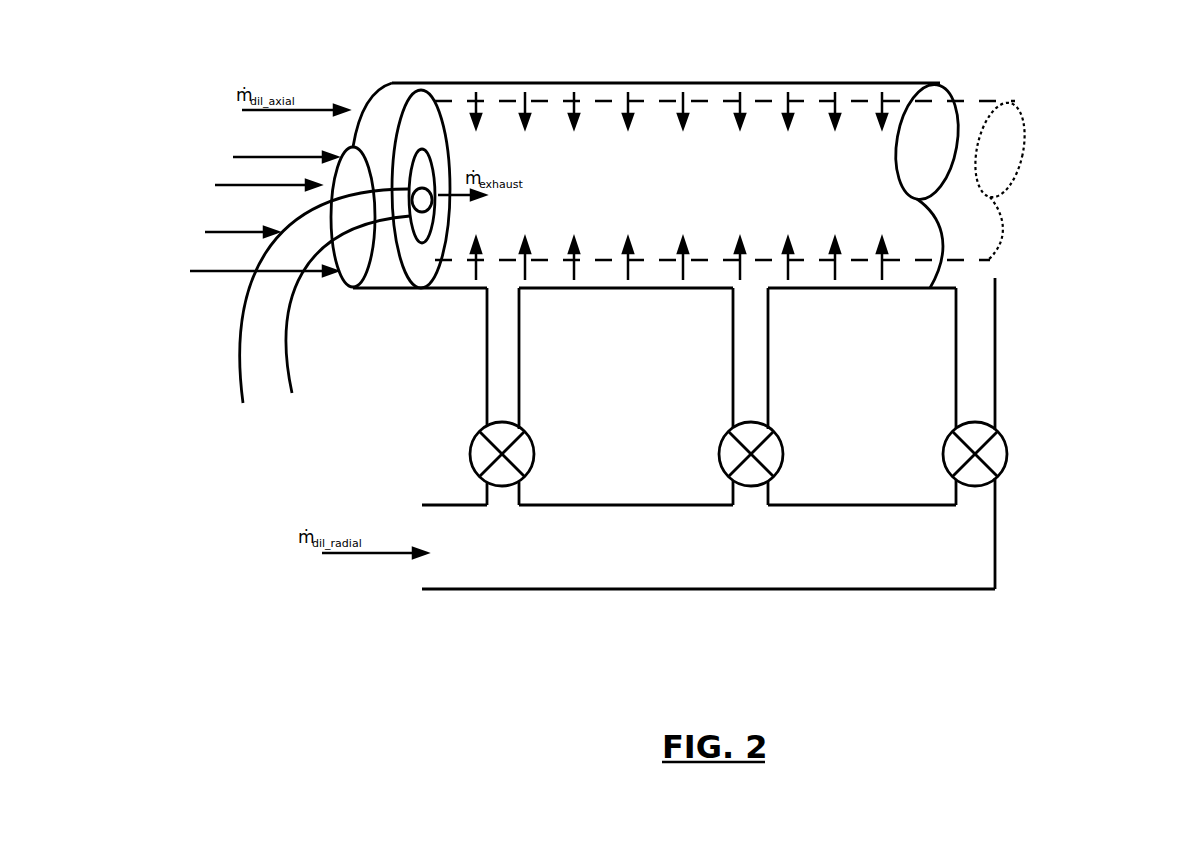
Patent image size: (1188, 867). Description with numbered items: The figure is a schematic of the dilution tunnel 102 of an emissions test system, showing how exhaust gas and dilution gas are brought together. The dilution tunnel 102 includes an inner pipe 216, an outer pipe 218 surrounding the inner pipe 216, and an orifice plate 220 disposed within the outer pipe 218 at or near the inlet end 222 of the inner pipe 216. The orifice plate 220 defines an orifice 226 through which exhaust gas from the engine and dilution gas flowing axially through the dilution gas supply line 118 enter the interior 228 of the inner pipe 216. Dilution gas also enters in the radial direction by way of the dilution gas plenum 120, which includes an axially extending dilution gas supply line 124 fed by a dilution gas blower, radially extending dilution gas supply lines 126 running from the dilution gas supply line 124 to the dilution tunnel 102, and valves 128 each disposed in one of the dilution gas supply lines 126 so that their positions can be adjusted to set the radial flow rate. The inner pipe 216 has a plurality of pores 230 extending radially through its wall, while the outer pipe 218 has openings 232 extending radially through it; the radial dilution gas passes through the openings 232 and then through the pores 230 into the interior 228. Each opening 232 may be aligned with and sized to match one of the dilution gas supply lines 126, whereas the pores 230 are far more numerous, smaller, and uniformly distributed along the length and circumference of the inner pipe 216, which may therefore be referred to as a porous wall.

The dilution tunnel 102 is at (390, 78).
The dilution gas supply line 118 is at (238, 330).
The dilution gas plenum 120 is at (1056, 340).
The dilution gas supply line 124 is at (440, 502).
The dilution gas supply lines 126 is at (486, 359).
The valves 128 is at (468, 455).
The inner pipe 216 is at (615, 102).
The outer pipe 218 is at (552, 82).
The orifice plate 220 is at (417, 127).
The inlet end 222 is at (435, 99).
The orifice 226 is at (421, 228).
The interior 228 is at (728, 157).
The pores 230 is at (555, 260).
The openings 232 is at (508, 288).